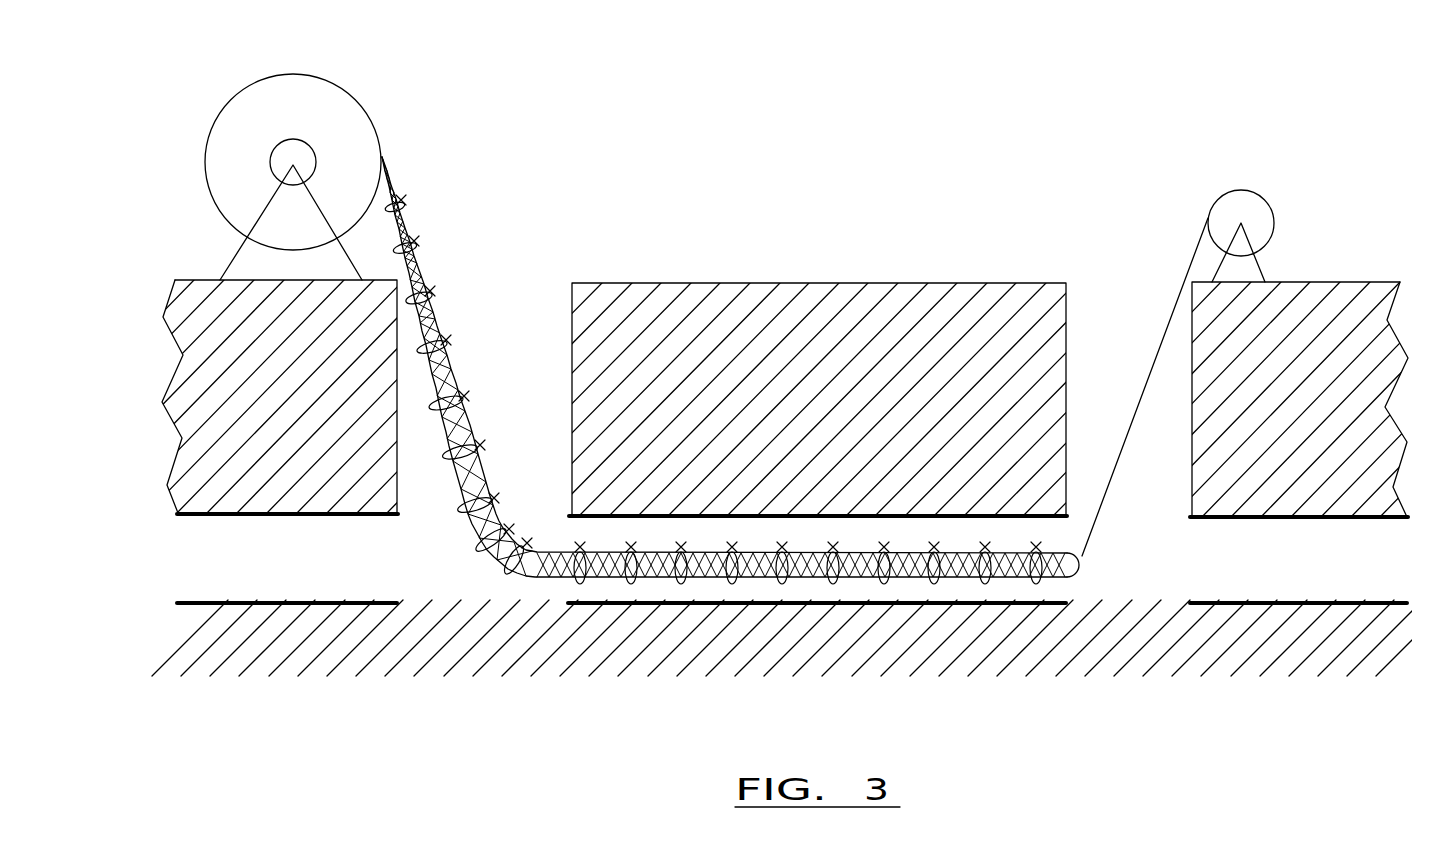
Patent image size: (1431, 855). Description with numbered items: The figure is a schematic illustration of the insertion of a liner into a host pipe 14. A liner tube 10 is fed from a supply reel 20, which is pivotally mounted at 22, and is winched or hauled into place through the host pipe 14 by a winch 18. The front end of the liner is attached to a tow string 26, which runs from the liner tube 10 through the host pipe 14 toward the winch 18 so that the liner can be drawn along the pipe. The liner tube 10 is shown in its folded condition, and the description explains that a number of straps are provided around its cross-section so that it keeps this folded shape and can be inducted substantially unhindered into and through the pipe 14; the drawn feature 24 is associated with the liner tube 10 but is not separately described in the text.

The liner tube 10 is at (748, 565).
The host pipe 14 is at (762, 512).
The winch 18 is at (1255, 217).
The supply reel 20 is at (247, 125).
The pivotal mounting 22 is at (293, 165).
The stitches 24 is at (882, 583).
The tow string 26 is at (1165, 333).